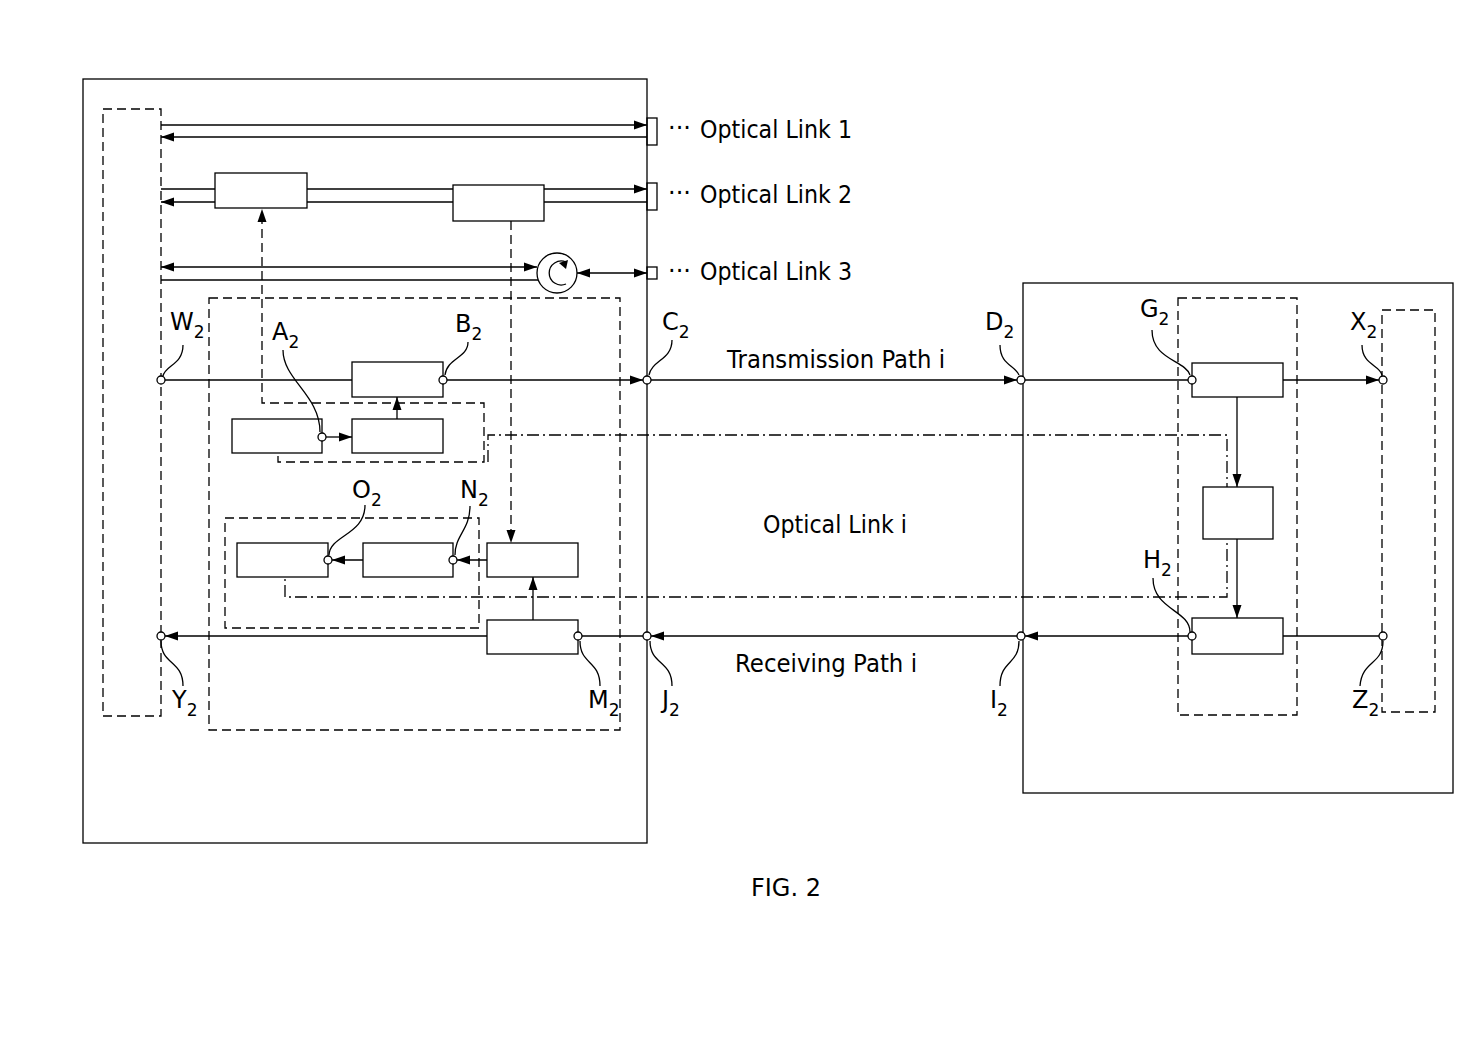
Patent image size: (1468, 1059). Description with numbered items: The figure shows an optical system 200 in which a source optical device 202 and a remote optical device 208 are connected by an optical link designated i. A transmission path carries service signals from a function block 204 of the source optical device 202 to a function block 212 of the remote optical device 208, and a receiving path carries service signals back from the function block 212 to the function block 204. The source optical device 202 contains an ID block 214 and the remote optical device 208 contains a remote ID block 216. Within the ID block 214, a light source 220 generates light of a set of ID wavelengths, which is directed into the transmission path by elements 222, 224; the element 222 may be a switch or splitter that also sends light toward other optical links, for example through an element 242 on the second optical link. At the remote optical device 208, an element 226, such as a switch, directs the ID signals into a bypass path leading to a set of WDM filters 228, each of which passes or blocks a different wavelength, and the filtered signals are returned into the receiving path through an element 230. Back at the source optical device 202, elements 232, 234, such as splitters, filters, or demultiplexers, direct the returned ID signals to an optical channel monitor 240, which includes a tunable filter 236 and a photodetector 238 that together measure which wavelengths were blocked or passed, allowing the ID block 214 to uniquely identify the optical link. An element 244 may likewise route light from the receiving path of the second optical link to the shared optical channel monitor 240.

The optical system 200 is at (1250, 71).
The source optical device 202 is at (647, 817).
The function block 204 is at (133, 108).
The remote optical device 208 is at (1023, 762).
The function block 212 is at (1407, 310).
The ID block 214 is at (413, 731).
The remote ID block 216 is at (1297, 688).
The light source 220 is at (258, 419).
The element 222 is at (443, 437).
The element 224 is at (398, 362).
The element 226 is at (1283, 392).
The set of WDM filters 228 is at (1273, 512).
The coupler on remote receiving path 230 is at (1283, 622).
The element 232 is at (533, 654).
The element 234 is at (530, 543).
The tunable filter 236 is at (437, 543).
The photodetector 238 is at (270, 543).
The optical channel monitor 240 is at (353, 628).
The element 242 is at (307, 183).
The element 244 is at (453, 208).